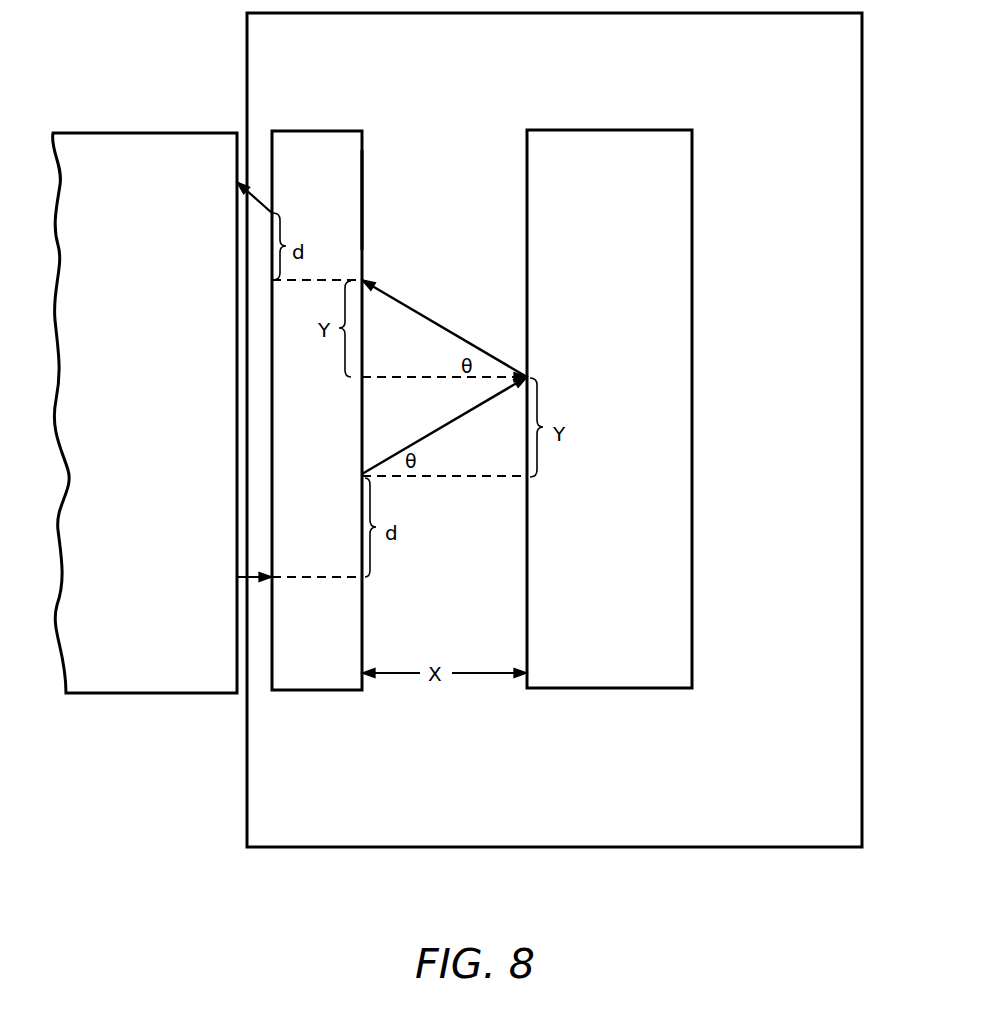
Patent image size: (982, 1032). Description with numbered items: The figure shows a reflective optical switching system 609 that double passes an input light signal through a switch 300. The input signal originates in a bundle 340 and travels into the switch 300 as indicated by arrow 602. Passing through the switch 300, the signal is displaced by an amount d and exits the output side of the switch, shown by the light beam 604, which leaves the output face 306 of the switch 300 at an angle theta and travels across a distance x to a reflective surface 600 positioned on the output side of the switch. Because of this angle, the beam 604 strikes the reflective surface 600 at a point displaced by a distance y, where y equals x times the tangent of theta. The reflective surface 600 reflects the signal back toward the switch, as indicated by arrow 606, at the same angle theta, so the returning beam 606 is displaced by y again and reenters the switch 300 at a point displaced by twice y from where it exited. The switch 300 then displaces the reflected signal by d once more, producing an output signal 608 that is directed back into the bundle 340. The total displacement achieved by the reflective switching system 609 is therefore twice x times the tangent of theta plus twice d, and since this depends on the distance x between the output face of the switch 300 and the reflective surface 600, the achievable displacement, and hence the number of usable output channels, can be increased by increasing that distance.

The switch 300 is at (317, 672).
The switch reflective face 306 is at (362, 182).
The bundle 340 is at (108, 673).
The reflective surface 600 is at (527, 148).
The arrow 602 is at (253, 583).
The light beam 604 is at (452, 423).
The arrow 606 is at (410, 309).
The output signal 608 is at (249, 191).
The reflective optical switching system 609 is at (817, 828).